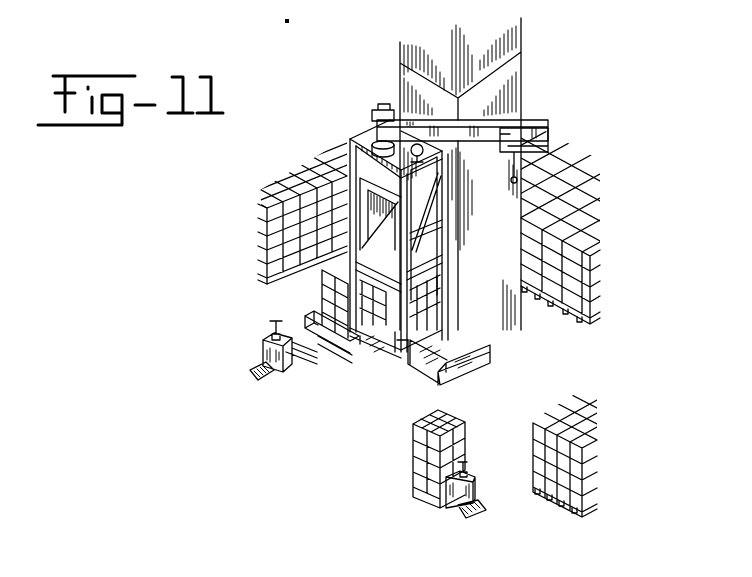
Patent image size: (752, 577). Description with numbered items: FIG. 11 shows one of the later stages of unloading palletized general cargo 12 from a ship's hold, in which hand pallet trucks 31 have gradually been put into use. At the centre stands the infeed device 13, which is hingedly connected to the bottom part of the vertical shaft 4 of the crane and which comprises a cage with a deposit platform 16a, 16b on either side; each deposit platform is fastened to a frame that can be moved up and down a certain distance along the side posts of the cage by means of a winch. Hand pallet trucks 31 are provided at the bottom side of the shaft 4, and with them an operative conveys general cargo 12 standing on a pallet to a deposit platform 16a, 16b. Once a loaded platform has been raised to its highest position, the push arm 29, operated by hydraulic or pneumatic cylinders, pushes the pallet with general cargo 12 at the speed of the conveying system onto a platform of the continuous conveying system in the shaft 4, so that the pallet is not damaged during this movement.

The vertical shaft 4 is at (526, 92).
The infeed device 13 is at (342, 158).
The push arm 29 is at (400, 330).
The deposit platform 16a is at (484, 363).
The deposit platform 16b is at (316, 318).
The hand pallet truck 31 is at (262, 352).
The palletized general cargo 12 is at (413, 447).